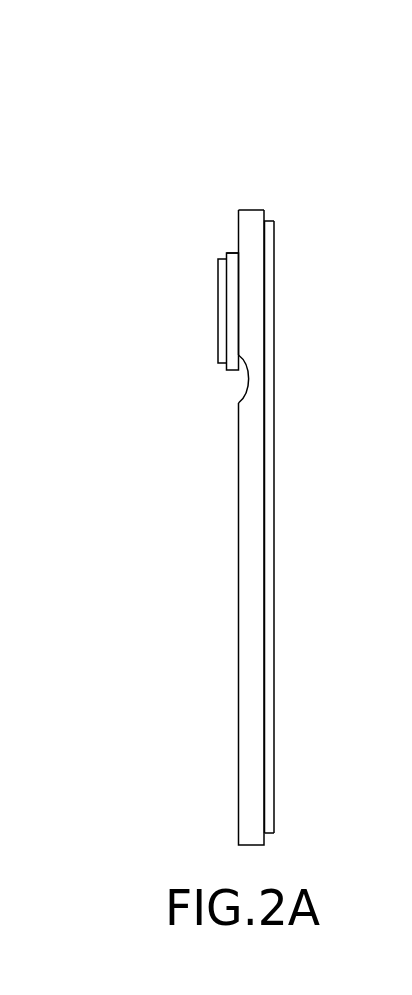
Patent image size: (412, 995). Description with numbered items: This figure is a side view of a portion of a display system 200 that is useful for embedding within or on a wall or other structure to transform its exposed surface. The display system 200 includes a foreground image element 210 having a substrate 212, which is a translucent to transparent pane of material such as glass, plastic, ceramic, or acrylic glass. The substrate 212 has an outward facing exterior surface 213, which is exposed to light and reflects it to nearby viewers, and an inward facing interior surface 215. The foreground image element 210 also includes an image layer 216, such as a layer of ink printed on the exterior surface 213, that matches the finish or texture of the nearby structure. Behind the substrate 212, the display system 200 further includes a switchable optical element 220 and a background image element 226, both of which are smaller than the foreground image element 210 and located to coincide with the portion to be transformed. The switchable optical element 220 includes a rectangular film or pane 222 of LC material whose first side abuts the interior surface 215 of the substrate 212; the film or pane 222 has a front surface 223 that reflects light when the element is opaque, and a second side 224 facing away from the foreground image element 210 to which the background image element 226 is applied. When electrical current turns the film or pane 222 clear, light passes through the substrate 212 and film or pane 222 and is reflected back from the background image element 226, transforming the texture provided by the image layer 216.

The display system 200 is at (293, 154).
The foreground image element 210 is at (270, 193).
The substrate 212 is at (248, 209).
The exterior surface 213 is at (265, 220).
The interior surface 215 is at (239, 218).
The image layer 216 is at (274, 308).
The switchable optical element 220 is at (215, 405).
The film or pane 222 is at (238, 252).
The front surface 223 is at (238, 403).
The second side 224 is at (225, 370).
The background image element 226 is at (218, 288).